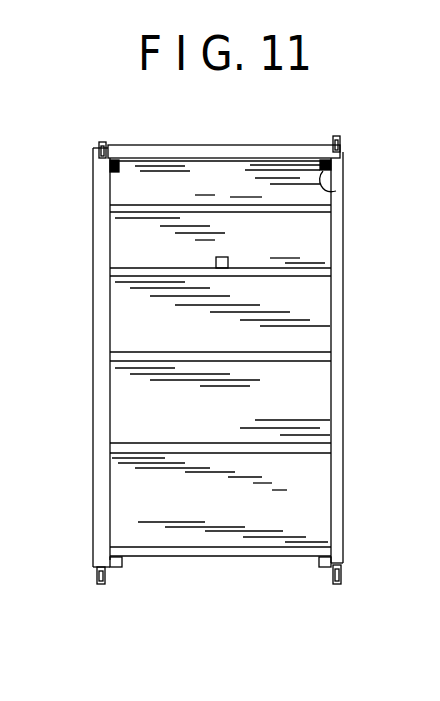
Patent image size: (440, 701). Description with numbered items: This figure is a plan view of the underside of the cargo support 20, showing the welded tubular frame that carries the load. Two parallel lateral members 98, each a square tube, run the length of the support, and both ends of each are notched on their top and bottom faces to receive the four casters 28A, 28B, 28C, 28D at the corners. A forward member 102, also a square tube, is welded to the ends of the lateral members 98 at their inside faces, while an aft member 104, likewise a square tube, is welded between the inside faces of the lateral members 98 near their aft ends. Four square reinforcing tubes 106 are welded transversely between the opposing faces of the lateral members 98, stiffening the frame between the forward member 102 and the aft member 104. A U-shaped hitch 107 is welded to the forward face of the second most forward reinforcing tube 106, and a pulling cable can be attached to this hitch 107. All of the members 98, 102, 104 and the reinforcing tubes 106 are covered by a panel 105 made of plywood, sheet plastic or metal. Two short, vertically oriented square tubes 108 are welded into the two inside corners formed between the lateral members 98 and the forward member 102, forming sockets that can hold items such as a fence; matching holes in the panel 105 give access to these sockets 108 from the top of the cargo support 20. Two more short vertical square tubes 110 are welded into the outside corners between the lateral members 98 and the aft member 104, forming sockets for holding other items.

The cargo support 20 is at (352, 289).
The caster 28A is at (336, 136).
The caster 28B is at (102, 142).
The caster 28C is at (338, 588).
The caster 28D is at (100, 582).
The lateral member 98 is at (92, 332).
The forward member 102 is at (242, 165).
The aft member 104 is at (268, 558).
The panel 105 is at (300, 419).
The reinforcing tube 106 is at (198, 214).
The hitch 107 is at (232, 258).
The socket tube 108 is at (119, 173).
The socket tube 110 is at (135, 568).